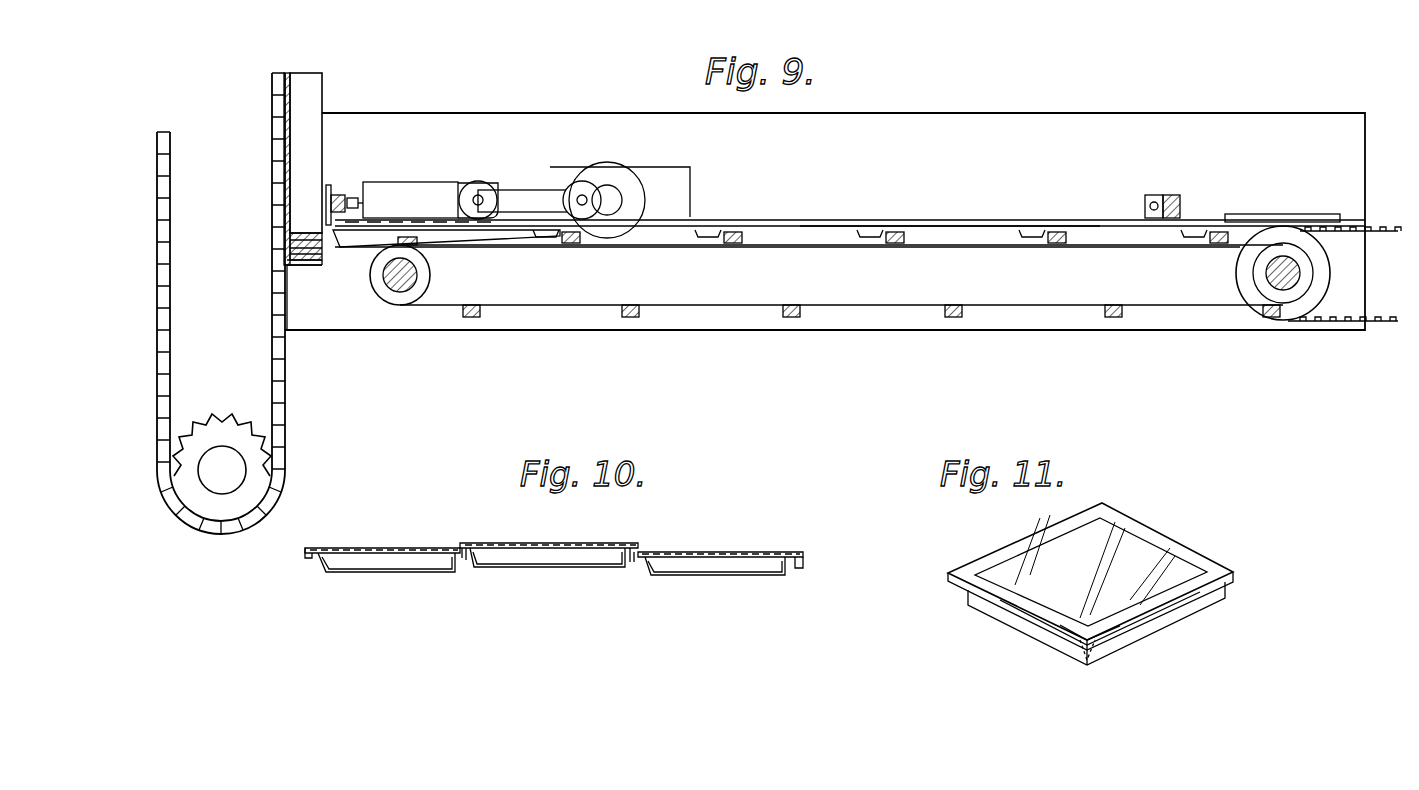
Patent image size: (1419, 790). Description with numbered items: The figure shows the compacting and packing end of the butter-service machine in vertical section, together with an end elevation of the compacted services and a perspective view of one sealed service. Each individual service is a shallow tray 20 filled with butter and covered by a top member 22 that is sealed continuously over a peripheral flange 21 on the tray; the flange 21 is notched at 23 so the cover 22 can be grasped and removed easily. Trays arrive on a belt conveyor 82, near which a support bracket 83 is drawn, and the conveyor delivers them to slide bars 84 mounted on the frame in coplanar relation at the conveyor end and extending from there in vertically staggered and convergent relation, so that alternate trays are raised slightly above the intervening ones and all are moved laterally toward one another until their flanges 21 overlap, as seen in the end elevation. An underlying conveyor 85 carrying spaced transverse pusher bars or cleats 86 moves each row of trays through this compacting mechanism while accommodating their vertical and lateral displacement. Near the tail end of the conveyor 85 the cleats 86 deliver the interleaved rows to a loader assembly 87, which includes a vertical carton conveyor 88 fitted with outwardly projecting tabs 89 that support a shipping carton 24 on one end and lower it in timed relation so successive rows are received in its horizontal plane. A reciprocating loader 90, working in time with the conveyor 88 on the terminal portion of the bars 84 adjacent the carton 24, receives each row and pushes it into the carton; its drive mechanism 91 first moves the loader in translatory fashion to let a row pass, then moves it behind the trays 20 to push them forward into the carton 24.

In FIG. 9, the shallow tray 20 is at (1172, 262).
In FIG. 10, the shallow tray 20 is at (722, 598).
In FIG. 11, the shallow tray 20 is at (1140, 640).
In FIG. 10, the peripheral flange 21 is at (818, 582).
In FIG. 11, the peripheral flange 21 is at (1055, 635).
In FIG. 10, the top member 22 is at (722, 530).
In FIG. 11, the top member 22 is at (1150, 556).
In FIG. 11, the notch 23 is at (1092, 660).
In FIG. 9, the shipping box or carton 24 is at (300, 88).
In FIG. 9, the belt conveyor 82 is at (1380, 230).
In FIG. 9, the support bracket 83 is at (1220, 200).
In FIG. 9, the slide bars 84 is at (926, 225).
In FIG. 9, the underlying conveyor 85 is at (842, 306).
In FIG. 9, the pusher bars or cleats 86 is at (1212, 270).
In FIG. 9, the loader assembly 87 is at (418, 145).
In FIG. 9, the vertical box or carton conveyor 88 is at (285, 382).
In FIG. 9, the outwardly projecting tabs 89 is at (302, 267).
In FIG. 9, the reciprocating loader 90 is at (347, 196).
In FIG. 9, the drive mechanism 91 is at (512, 200).